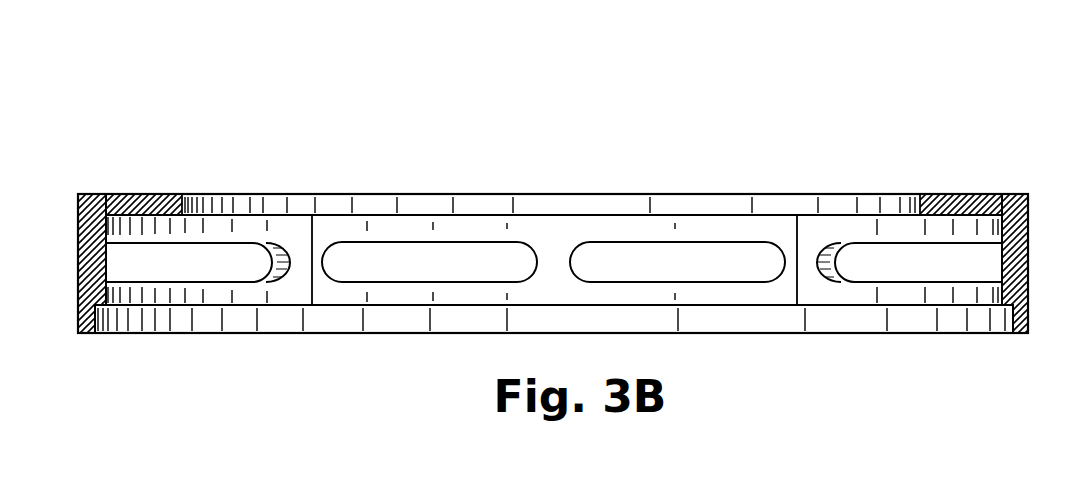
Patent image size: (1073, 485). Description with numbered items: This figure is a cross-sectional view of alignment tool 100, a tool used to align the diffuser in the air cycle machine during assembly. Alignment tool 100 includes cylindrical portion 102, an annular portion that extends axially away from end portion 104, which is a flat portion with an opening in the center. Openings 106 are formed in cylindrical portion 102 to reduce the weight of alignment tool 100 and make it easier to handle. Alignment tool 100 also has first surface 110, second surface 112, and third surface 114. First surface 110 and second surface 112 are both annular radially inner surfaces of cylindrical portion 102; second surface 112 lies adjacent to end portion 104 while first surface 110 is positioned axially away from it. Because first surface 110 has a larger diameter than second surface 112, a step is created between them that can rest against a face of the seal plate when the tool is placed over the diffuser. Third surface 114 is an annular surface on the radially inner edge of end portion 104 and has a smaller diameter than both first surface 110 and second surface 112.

The alignment tool 100 is at (648, 130).
The cylindrical portion 102 is at (92, 266).
The end portion 104 is at (143, 205).
The openings 106 is at (171, 273).
The first surface 110 is at (395, 321).
The second surface 112 is at (776, 292).
The third surface 114 is at (698, 203).